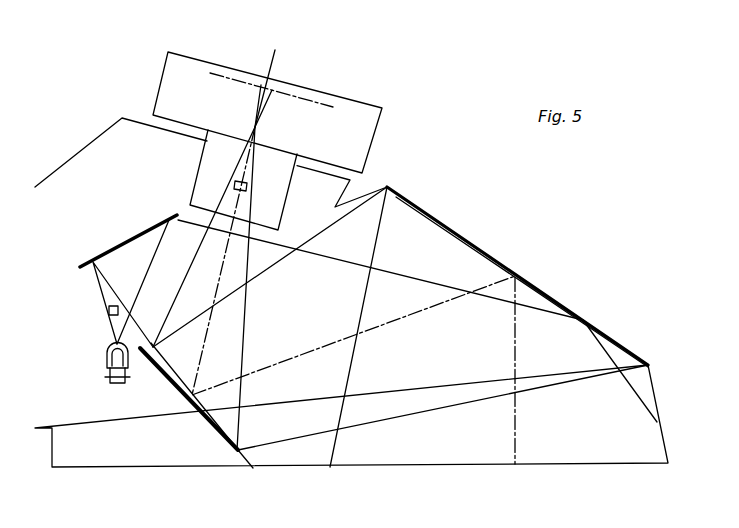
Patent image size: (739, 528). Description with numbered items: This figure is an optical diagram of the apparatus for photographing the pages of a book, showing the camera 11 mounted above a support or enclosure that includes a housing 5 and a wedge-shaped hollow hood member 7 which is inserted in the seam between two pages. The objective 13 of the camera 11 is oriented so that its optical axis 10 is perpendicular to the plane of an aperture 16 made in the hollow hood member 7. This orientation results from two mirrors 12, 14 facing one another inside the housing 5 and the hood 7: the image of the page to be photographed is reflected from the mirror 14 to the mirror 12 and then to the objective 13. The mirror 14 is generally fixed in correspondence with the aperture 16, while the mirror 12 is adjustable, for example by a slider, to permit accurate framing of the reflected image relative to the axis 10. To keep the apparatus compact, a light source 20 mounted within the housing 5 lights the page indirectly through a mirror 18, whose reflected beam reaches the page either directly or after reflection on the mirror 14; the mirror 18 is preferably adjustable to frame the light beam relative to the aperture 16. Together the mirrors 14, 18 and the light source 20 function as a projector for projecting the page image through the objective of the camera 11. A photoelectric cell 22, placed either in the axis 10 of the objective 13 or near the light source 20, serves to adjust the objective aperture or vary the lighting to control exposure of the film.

The housing 5 is at (73, 155).
The wedge-shaped hollow hood member 7 is at (446, 222).
The optical axis 10 is at (220, 266).
The camera 11 is at (358, 137).
The mirror 12 is at (200, 418).
The objective 13 is at (270, 210).
The mirror 14 is at (530, 282).
The aperture 16 is at (568, 464).
The mirror 18 is at (128, 240).
The light source 20 is at (110, 381).
The photoelectric cell 22 is at (235, 184).